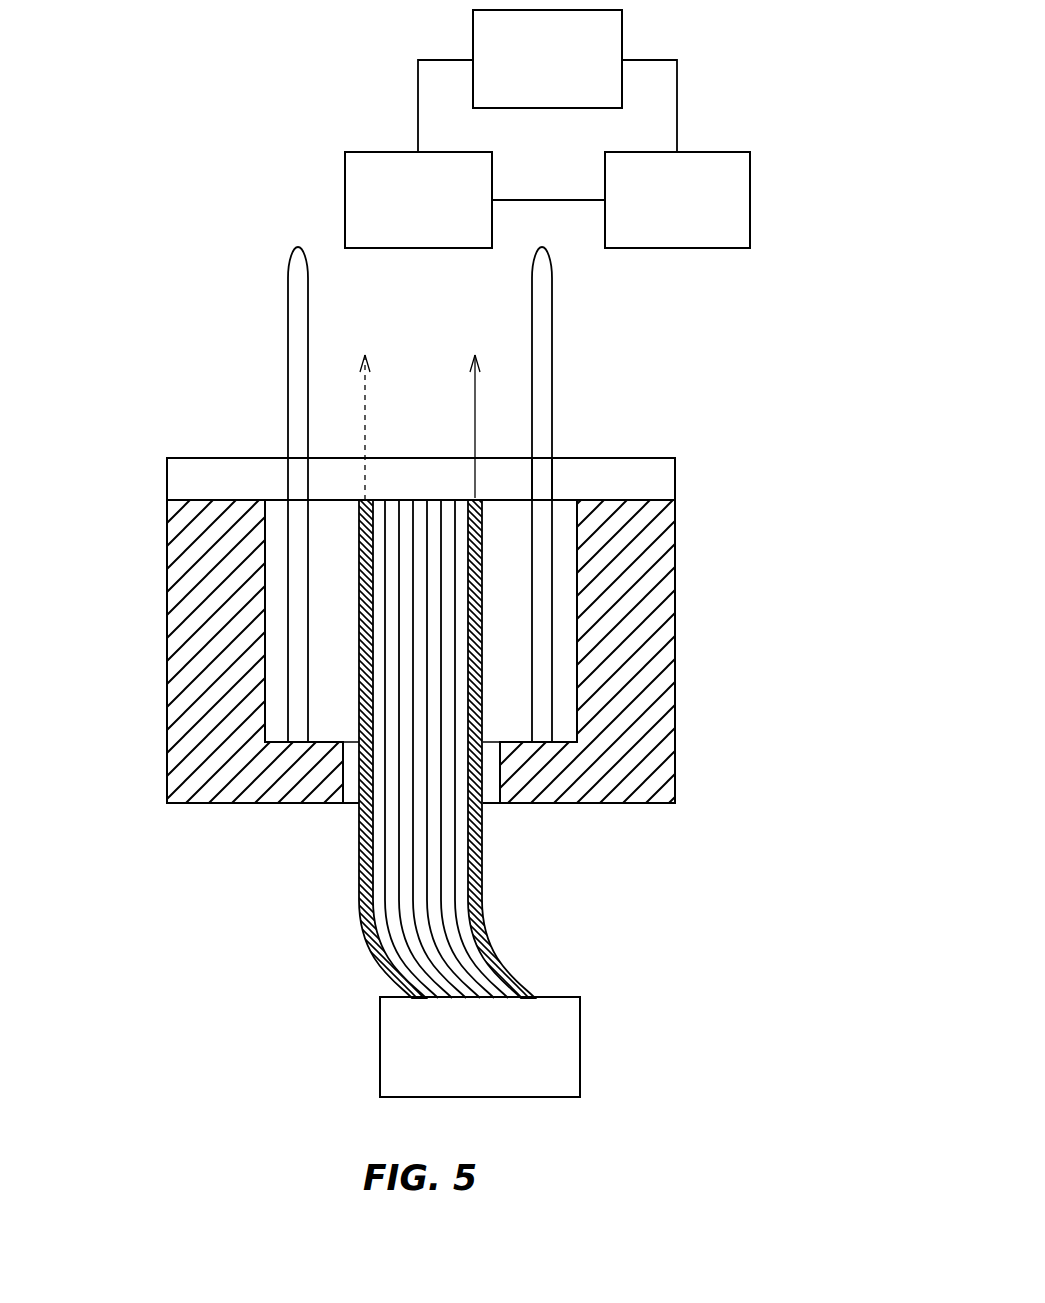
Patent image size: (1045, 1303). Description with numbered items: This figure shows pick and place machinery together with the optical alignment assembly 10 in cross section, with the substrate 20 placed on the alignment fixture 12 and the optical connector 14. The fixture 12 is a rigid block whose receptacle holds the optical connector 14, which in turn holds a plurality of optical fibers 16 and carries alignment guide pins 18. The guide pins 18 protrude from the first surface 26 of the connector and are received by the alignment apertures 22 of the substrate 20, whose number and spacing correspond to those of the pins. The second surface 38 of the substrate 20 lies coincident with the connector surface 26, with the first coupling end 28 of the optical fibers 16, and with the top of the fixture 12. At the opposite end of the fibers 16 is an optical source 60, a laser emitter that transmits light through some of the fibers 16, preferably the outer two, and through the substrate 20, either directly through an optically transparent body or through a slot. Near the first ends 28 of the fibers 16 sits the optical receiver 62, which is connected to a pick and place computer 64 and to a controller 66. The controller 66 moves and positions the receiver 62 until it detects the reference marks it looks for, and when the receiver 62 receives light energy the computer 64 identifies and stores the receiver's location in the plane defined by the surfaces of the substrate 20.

The alignment assembly 10 is at (223, 867).
The alignment fixture 12 is at (675, 587).
The optical connector 14 is at (265, 592).
The optical fibers 16 is at (486, 902).
The alignment guide pins 18 is at (552, 358).
The substrate 20 is at (167, 480).
The alignment apertures 22 is at (553, 480).
The first surface of the optical connector 26 is at (500, 503).
The first coupling end 28 is at (408, 500).
The second surface of the substrate 38 is at (358, 503).
The optical source 60 is at (580, 1046).
The optical receiver 62 is at (345, 175).
The pick and place computer 64 is at (750, 175).
The controller 66 is at (622, 32).